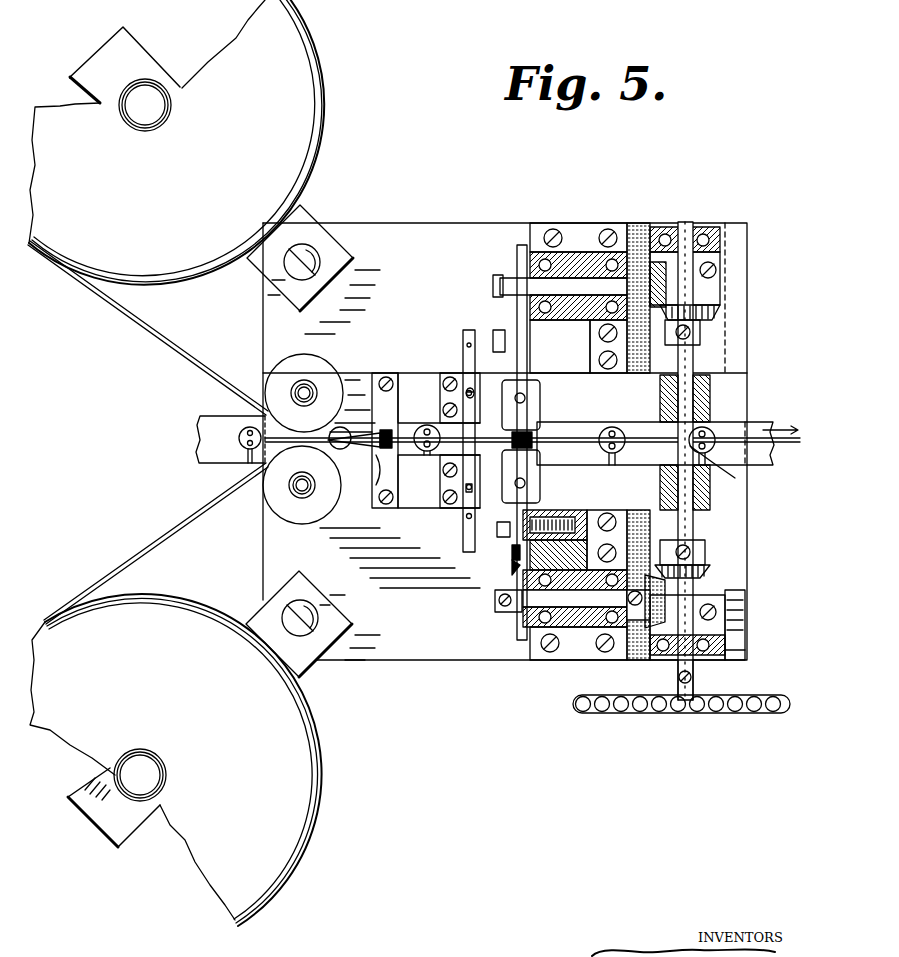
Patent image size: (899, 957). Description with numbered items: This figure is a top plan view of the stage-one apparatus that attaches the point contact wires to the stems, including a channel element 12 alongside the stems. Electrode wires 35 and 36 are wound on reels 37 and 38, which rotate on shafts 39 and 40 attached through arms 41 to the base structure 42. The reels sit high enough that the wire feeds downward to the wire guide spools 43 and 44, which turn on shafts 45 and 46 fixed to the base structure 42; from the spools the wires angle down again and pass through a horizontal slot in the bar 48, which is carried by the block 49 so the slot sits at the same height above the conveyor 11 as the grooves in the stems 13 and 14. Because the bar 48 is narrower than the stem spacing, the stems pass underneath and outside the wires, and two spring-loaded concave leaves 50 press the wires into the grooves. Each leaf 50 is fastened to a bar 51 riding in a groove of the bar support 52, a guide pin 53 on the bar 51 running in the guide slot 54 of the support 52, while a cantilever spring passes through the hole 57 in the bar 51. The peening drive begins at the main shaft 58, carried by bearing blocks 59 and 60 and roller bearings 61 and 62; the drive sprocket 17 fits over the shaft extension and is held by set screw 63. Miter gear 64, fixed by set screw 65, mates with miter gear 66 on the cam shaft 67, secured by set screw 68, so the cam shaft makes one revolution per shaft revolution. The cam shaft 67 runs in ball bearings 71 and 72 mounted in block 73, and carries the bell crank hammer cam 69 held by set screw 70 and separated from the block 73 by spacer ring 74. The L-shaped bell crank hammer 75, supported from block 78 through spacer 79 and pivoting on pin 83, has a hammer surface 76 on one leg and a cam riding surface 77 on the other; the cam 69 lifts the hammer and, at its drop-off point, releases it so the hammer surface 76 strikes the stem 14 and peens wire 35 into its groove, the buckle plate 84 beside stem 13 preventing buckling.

The conveyor 11 is at (210, 464).
The tape channel 12 is at (744, 422).
The stem 13 is at (712, 436).
The stem 14 is at (735, 478).
The drive sprocket 17 is at (630, 712).
The point contact wire 35 is at (127, 565).
The point contact wire 36 is at (130, 318).
The reel 37 is at (318, 822).
The reel 38 is at (326, 100).
The shaft 39 is at (146, 762).
The shaft 40 is at (146, 120).
The arm 41 is at (140, 40).
The base structure 42 is at (748, 316).
The wire guide spool 43 is at (300, 520).
The wire guide spool 44 is at (330, 360).
The shaft 45 is at (292, 490).
The shaft 46 is at (302, 383).
The bar 48 is at (372, 470).
The block 49 is at (388, 376).
The concave leaf 50 is at (434, 425).
The bar 51 is at (467, 552).
The bar support 52 is at (438, 512).
The guide pin 53 is at (466, 492).
The guide slot 54 is at (445, 488).
The hole 57 is at (466, 518).
The main shaft 58 is at (712, 595).
The bearing block 59 is at (745, 628).
The bearing block 60 is at (720, 235).
The roller bearing 61 is at (745, 655).
The roller bearing 62 is at (693, 235).
The set screw 63 is at (688, 712).
The miter gear 64 is at (712, 570).
The set screw 65 is at (706, 550).
The miter gear 66 is at (654, 576).
The cam shaft 67 is at (580, 608).
The set screw 68 is at (638, 610).
The bell crank hammer cam 69 is at (515, 637).
The set screw 70 is at (498, 610).
The ball bearing 71 is at (628, 640).
The ball bearing 72 is at (545, 628).
The block 73 is at (590, 630).
The spacer ring 74 is at (528, 622).
The bell crank hammer 75 is at (512, 552).
The hammer surface 76 is at (535, 430).
The cam riding surface 77 is at (512, 568).
The block 78 is at (590, 512).
The spacer 79 is at (540, 515).
The pin 83 is at (500, 537).
The buckle plate 84 is at (541, 398).